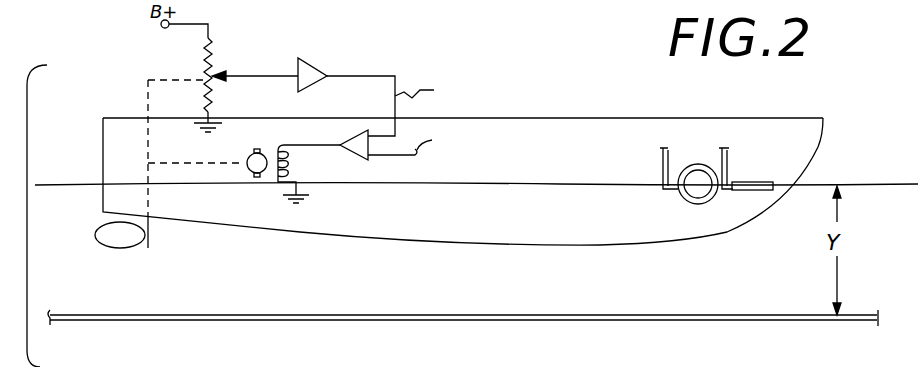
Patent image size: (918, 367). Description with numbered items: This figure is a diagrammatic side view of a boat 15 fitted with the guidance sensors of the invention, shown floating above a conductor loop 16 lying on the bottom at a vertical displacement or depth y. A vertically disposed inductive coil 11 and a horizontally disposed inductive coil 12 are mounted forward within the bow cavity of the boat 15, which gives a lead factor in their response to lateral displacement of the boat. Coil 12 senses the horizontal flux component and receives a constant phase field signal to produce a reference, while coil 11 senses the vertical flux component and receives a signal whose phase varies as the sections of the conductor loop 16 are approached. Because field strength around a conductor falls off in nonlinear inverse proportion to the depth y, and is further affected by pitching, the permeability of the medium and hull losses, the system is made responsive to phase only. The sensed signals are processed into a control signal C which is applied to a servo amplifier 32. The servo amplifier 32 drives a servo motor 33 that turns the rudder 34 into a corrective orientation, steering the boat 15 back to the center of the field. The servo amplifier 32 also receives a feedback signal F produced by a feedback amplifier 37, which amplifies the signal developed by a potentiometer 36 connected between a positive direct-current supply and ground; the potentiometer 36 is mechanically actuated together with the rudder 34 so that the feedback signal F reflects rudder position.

The vertically disposed inductive sensor or coil 11 is at (757, 181).
The horizontally disposed inductive sensor or coil 12 is at (688, 206).
The boat 15 is at (556, 118).
The conductor loop 16 is at (693, 314).
The servo amplifier 32 is at (356, 132).
The servo motor 33 is at (250, 171).
The rudder 34 is at (145, 242).
The potentiometer 36 is at (212, 54).
The feedback amplifier 37 is at (320, 66).
The feedback signal F is at (421, 91).
The control signal C is at (433, 143).